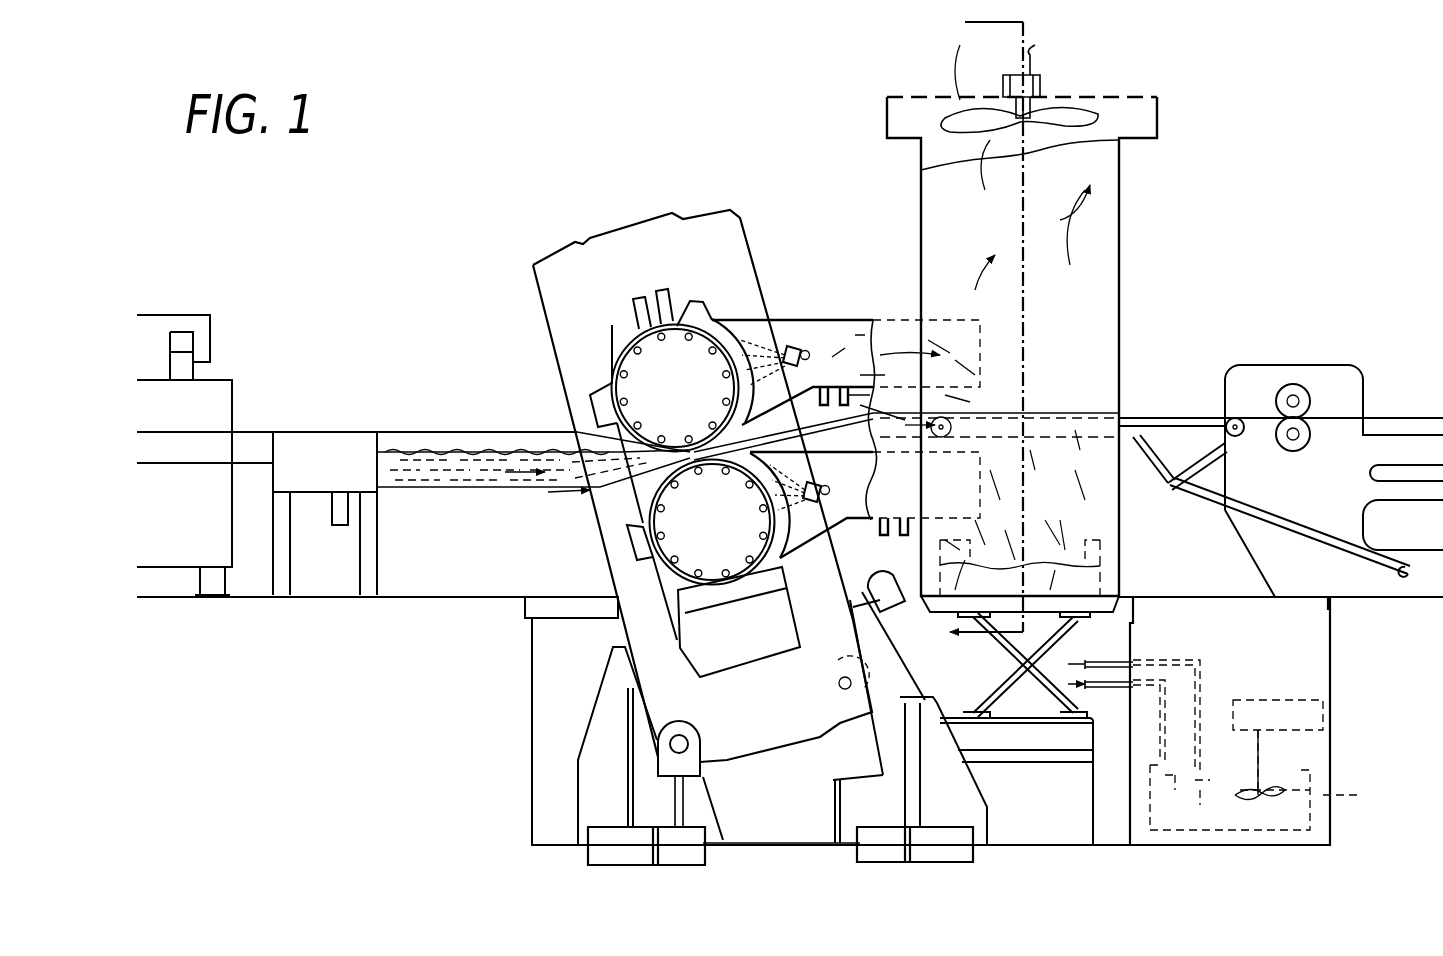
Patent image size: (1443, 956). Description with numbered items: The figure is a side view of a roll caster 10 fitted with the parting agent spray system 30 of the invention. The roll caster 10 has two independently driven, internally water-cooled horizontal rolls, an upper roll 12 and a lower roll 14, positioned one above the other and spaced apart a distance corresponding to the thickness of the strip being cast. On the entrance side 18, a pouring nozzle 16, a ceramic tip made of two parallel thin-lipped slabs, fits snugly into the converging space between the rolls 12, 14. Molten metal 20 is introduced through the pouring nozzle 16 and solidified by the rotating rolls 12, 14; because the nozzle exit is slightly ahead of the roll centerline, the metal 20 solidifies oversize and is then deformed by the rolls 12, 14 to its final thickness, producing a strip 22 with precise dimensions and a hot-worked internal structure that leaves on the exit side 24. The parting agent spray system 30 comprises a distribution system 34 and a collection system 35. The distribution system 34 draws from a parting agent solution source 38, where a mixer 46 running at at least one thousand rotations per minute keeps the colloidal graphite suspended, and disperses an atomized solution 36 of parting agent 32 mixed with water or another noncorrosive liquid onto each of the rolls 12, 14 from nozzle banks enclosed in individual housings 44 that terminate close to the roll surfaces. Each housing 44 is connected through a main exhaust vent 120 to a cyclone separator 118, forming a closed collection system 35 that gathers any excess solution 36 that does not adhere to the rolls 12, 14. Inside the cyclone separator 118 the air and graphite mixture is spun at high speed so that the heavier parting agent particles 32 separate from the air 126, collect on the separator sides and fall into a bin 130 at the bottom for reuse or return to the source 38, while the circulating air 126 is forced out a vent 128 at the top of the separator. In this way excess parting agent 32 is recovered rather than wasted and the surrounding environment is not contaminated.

The roll caster 10 is at (600, 255).
The upper roll 12 is at (690, 401).
The lower roll 14 is at (727, 535).
The pouring nozzle 16 is at (563, 437).
The entrance side 18 is at (567, 495).
The molten metal 20 is at (413, 450).
The strip 22 is at (762, 446).
The exit side 24 is at (790, 436).
The parting agent spray system 30 is at (808, 200).
The parting agent 32 is at (1103, 578).
The distribution system 34 is at (768, 333).
The collection system 35 is at (1125, 178).
The parting agent solution 36 is at (940, 343).
The parting agent solution source 38 is at (1330, 808).
The housing 44 is at (745, 330).
The mixer 46 is at (1330, 790).
The cyclone separator 118 is at (1143, 110).
The main exhaust vent 120 is at (858, 330).
The air 126 is at (1090, 220).
The vent 128 is at (1065, 98).
The bin 130 is at (1110, 578).